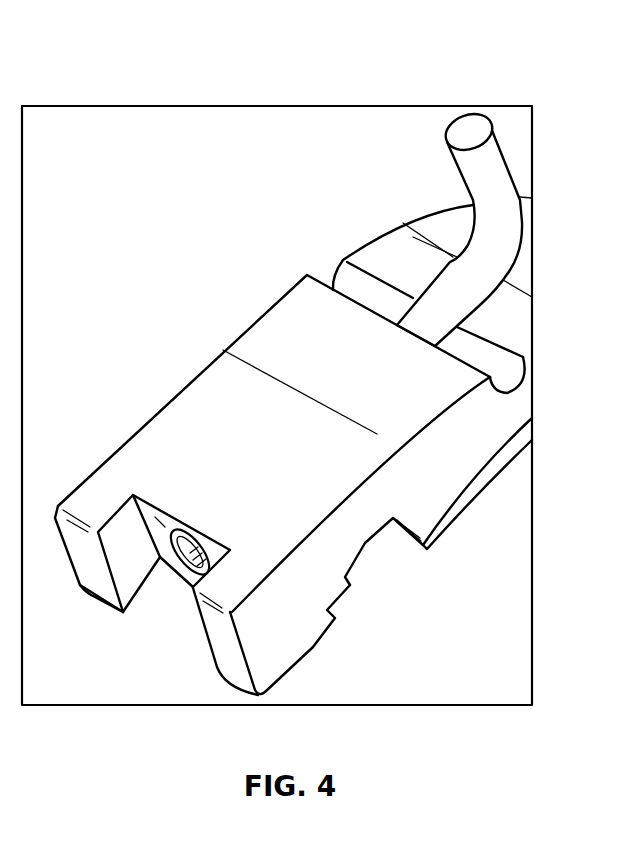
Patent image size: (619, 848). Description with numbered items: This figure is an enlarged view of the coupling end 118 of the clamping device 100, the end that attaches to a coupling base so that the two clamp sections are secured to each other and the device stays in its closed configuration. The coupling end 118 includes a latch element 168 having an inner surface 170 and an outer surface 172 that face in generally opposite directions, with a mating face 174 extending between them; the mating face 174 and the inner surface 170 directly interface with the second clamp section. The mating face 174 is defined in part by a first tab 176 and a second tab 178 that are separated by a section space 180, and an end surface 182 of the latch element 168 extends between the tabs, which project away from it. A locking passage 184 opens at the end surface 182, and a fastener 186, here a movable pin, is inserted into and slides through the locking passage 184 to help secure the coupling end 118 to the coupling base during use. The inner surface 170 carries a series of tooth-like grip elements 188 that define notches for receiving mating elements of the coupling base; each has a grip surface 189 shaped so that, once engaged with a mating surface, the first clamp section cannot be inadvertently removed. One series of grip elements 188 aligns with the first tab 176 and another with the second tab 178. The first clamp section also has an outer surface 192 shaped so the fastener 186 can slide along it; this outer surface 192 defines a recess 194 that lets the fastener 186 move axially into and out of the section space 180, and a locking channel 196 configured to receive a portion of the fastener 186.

The clamping device 100 is at (196, 61).
The coupling end 118 is at (154, 246).
The latch element 168 is at (240, 415).
The inner surface 170 is at (357, 608).
The outer surface 172 is at (189, 452).
The mating face 174 is at (118, 652).
The first tab 176 is at (90, 502).
The second tab 178 is at (235, 580).
The section space 180 is at (159, 625).
The end surface 182 is at (134, 496).
The locking passage 184 is at (185, 565).
The fastener 186 is at (452, 290).
The grip elements 188 is at (367, 548).
The grip surface 189 is at (355, 580).
The outer surface 192 is at (385, 255).
The recess 194 is at (484, 310).
The locking channel 196 is at (324, 267).